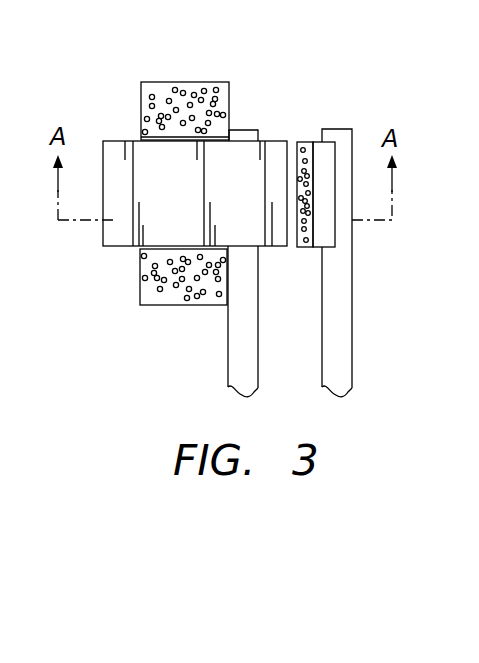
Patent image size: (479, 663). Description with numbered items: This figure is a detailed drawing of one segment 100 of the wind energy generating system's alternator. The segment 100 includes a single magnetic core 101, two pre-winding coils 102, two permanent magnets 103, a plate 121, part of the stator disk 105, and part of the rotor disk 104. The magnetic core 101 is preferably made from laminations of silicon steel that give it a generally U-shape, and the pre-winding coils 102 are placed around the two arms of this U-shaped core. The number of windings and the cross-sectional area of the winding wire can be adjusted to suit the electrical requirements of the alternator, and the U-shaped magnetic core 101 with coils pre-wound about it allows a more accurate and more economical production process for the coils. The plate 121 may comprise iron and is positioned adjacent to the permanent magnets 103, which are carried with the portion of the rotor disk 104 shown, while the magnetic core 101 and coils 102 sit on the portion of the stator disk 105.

The segment 100 is at (126, 64).
The magnetic core 101 is at (127, 140).
The pre-winding coils 102 is at (200, 82).
The permanent magnets 103 is at (303, 141).
The rotor disk 104 is at (352, 358).
The stator disk 105 is at (227, 368).
The plate 121 is at (335, 247).